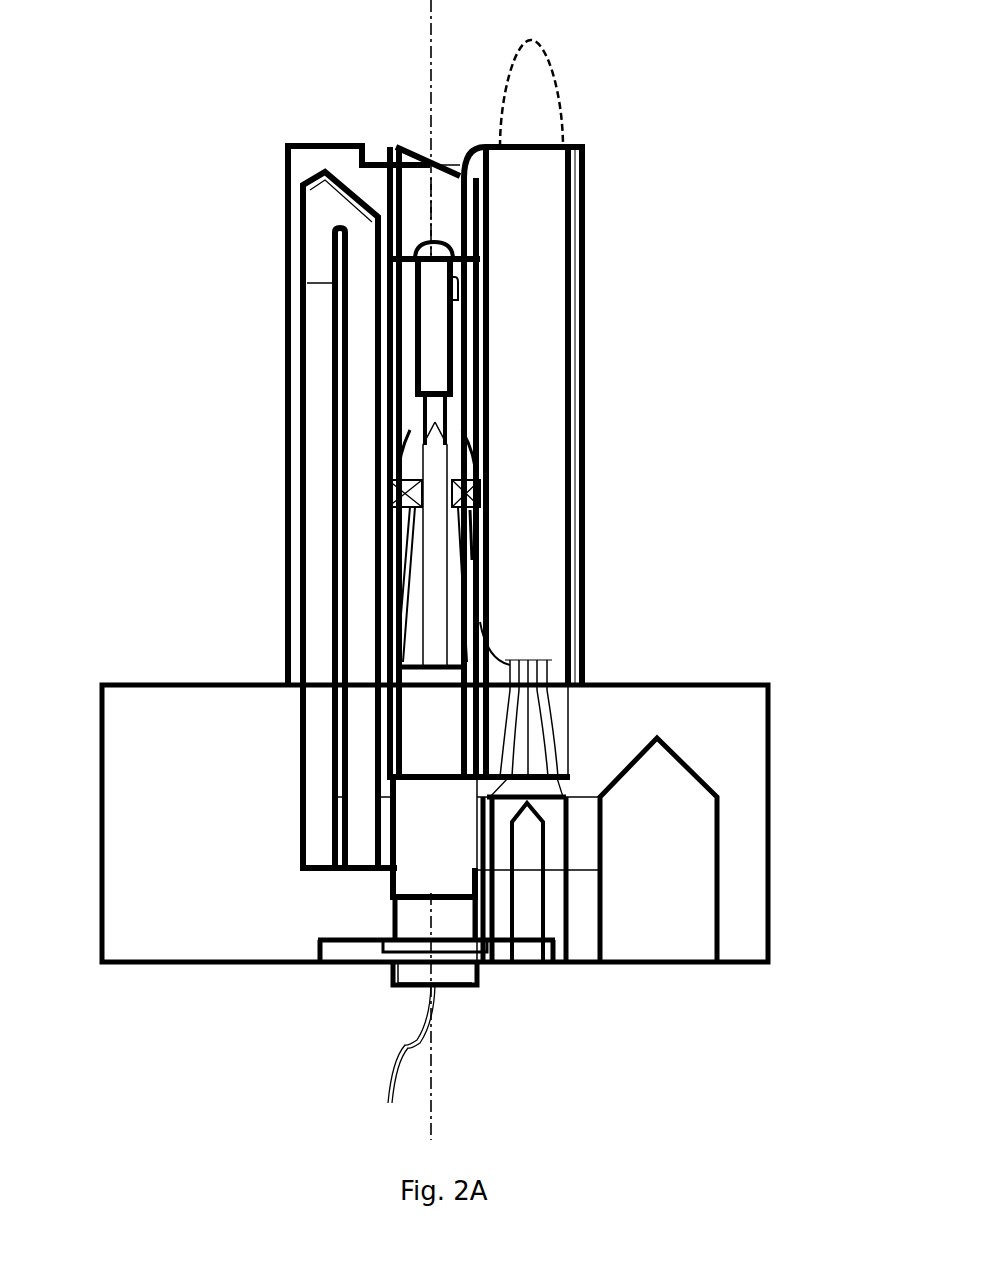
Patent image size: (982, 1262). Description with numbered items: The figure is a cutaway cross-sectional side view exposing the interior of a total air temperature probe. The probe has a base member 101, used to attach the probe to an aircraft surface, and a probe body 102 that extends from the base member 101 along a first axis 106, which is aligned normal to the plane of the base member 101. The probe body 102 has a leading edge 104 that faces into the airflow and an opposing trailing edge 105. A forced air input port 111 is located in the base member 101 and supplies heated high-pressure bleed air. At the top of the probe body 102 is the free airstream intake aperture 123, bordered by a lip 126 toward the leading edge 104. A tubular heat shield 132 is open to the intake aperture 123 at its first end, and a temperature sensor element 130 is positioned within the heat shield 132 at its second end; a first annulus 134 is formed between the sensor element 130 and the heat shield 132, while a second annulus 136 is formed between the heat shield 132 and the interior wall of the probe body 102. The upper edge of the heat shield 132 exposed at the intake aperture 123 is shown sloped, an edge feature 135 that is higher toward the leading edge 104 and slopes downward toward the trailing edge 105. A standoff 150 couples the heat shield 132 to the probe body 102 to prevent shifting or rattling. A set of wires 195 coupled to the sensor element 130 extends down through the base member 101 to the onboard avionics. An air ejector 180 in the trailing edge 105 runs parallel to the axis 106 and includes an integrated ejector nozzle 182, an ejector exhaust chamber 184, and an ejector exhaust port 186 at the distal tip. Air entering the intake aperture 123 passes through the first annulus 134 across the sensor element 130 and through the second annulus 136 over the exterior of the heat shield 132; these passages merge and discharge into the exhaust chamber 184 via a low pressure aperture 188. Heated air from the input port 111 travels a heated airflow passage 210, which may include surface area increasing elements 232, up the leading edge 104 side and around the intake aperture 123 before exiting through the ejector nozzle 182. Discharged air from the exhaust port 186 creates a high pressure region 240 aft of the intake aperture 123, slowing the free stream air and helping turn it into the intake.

The base member 101 is at (100, 746).
The probe body 102 is at (138, 360).
The leading edge 104 is at (285, 404).
The trailing edge 105 is at (585, 402).
The first axis 106 is at (434, 18).
The forced air input port 111 is at (653, 975).
The intake aperture 123 is at (399, 98).
The lip 126 is at (285, 158).
The temperature sensor element 130 is at (415, 322).
The tubular heat shield 132 is at (388, 226).
The first annulus 134 is at (432, 170).
The chamfer 135 is at (455, 172).
The second annulus 136 is at (390, 180).
The standoff 150 is at (460, 285).
The air ejector 180 is at (605, 148).
The integrated ejector nozzle 182 is at (548, 668).
The ejector exhaust chamber 184 is at (527, 392).
The ejector exhaust port 186 is at (584, 143).
The low pressure aperture 188 is at (512, 647).
The set of wires 195 is at (378, 1040).
The heated airflow passage 210 is at (352, 470).
The surface area increasing elements 232 is at (305, 255).
The high pressure region 240 is at (560, 90).